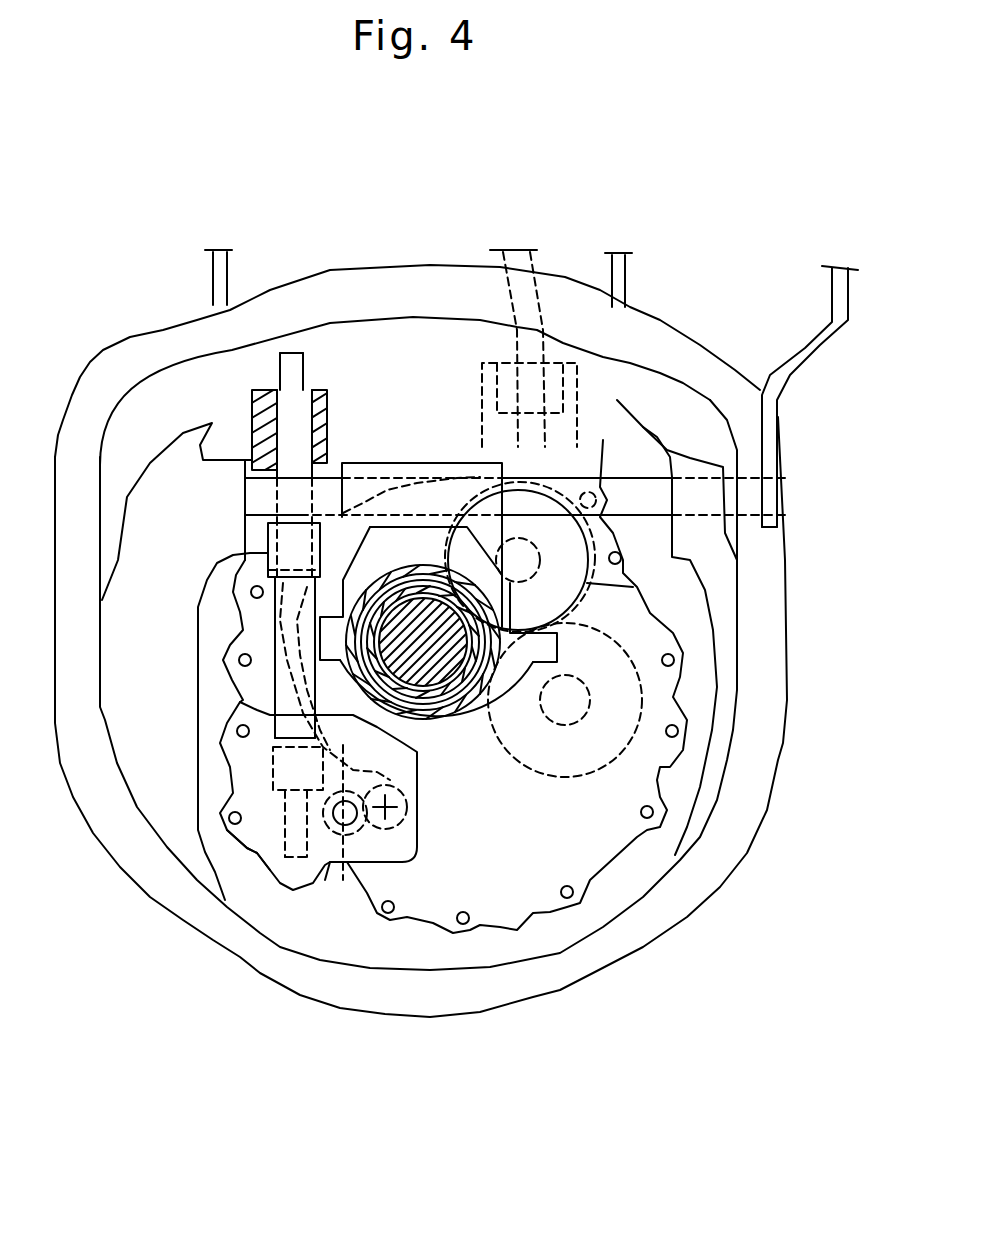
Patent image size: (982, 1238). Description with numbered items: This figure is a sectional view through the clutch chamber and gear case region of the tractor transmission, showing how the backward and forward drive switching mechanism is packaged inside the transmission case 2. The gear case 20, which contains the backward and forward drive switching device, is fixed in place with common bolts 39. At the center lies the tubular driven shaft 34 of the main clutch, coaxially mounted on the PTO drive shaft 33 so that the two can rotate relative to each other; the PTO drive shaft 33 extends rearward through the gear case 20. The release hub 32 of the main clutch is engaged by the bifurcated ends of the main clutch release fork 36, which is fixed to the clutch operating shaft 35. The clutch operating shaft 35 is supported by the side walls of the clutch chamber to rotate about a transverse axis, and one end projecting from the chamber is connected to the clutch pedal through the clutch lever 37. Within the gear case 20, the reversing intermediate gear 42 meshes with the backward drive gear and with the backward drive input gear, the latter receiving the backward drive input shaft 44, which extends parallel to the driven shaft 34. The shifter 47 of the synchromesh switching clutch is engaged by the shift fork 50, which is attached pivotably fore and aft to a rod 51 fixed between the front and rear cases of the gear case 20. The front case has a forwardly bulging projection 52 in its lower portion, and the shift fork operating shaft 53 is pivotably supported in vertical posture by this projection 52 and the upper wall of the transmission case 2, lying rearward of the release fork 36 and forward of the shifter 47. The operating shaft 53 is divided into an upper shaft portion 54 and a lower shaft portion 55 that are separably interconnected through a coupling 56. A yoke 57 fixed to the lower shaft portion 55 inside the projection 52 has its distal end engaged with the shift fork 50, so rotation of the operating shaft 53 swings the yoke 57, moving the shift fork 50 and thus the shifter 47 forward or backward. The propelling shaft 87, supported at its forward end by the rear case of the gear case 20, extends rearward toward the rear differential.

The transmission case 2 is at (257, 980).
The gear case 20 is at (427, 923).
The release hub 32 is at (423, 608).
The PTO drive shaft 33 is at (427, 678).
The driven shaft 34 is at (240, 702).
The clutch operating shaft 35 is at (516, 457).
The main clutch release fork 36 is at (430, 463).
The clutch lever 37 is at (818, 396).
The common bolts 39 is at (599, 960).
The reversing intermediate gear 42 is at (571, 557).
The backward drive input shaft 44 is at (691, 721).
The shifter 47 is at (540, 773).
The shift fork 50 is at (478, 792).
The rod 51 is at (345, 885).
The projection 52 is at (221, 912).
The shift fork operating shaft 53 is at (233, 513).
The upper shaft portion 54 is at (221, 507).
The lower shaft portion 55 is at (258, 681).
The coupling 56 is at (236, 551).
The yoke 57 is at (273, 773).
The propelling shaft 87 is at (395, 822).